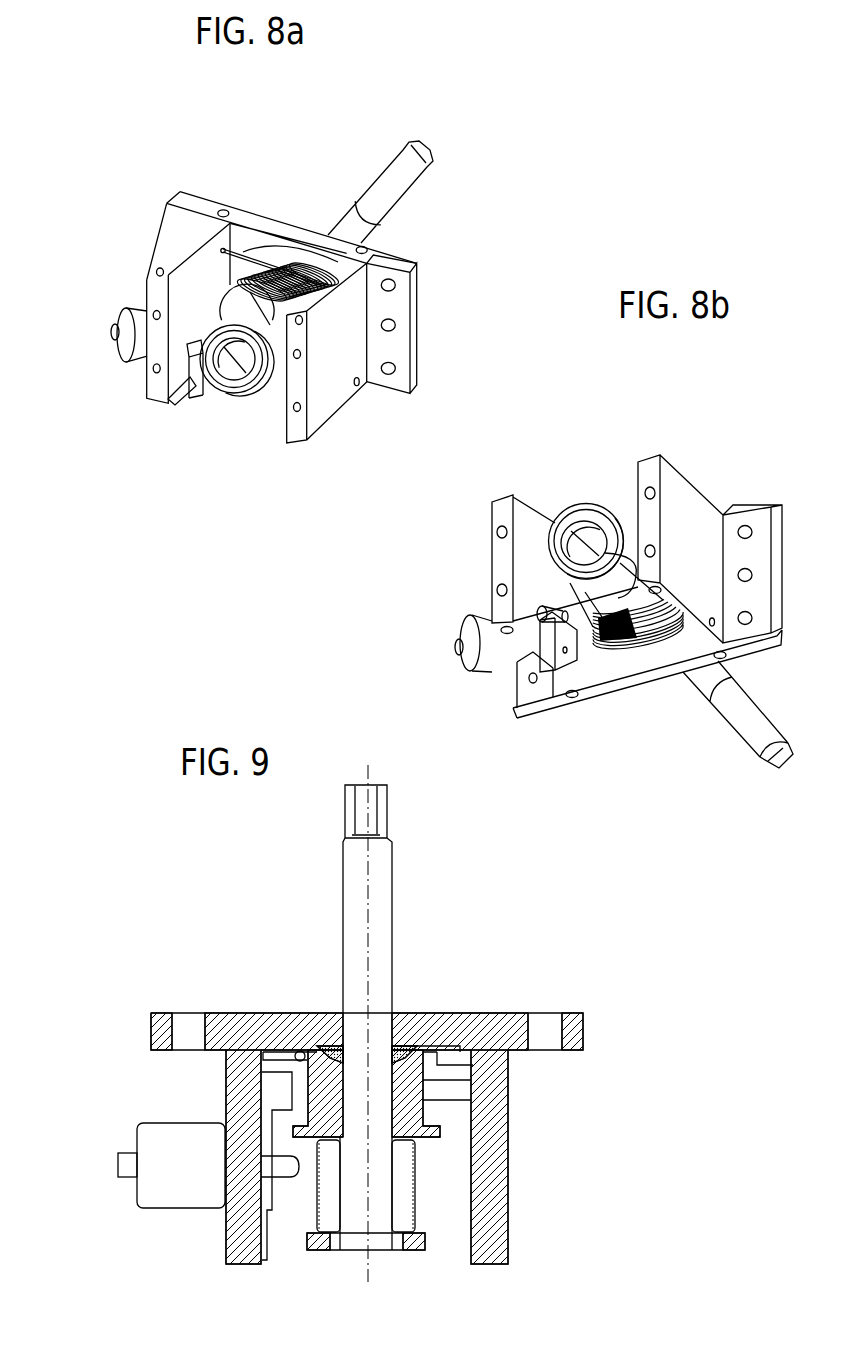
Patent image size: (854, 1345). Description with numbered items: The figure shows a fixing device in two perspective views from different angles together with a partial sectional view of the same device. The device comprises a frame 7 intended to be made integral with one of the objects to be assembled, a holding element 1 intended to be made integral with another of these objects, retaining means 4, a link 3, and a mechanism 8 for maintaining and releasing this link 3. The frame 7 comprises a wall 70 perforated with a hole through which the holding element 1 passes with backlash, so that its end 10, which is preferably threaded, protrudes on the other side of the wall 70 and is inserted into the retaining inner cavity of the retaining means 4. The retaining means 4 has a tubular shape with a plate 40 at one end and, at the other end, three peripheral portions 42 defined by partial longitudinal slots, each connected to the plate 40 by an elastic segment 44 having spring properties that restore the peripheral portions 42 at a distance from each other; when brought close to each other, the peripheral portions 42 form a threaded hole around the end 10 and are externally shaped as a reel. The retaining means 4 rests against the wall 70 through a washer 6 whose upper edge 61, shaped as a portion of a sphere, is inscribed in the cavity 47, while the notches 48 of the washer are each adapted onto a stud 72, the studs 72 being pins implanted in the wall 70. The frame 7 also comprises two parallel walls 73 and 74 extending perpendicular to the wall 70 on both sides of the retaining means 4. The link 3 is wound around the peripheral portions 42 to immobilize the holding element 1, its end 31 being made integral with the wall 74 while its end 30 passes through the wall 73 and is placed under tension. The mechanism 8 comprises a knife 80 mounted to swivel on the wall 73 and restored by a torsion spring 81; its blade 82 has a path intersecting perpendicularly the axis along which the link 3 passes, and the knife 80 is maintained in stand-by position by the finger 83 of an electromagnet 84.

In FIG. 8a, the holding element 1 is at (394, 188).
In FIG. 9, the holding element 1 is at (372, 858).
In FIG. 8a, the link 3 is at (300, 262).
In FIG. 8a, the retaining means 4 is at (262, 403).
In FIG. 8b, the retaining means 4 is at (598, 492).
In FIG. 9, the retaining means 4 is at (392, 1260).
In FIG. 9, the washer 6 is at (318, 1050).
In FIG. 8a, the frame 7 is at (436, 229).
In FIG. 8a, the mechanism 8 is at (175, 415).
In FIG. 9, the end 10 is at (373, 1110).
In FIG. 8a, the end 30 is at (226, 250).
In FIG. 8a, the end 31 is at (358, 301).
In FIG. 9, the plate 40 is at (348, 1242).
In FIG. 9, the peripheral portions 42 is at (412, 1128).
In FIG. 9, the elastic segment 44 is at (413, 1205).
In FIG. 9, the cavity 47 is at (423, 1065).
In FIG. 9, the notches 48 is at (296, 1053).
In FIG. 9, the upper edge 61 is at (413, 1053).
In FIG. 8a, the wall 70 is at (273, 225).
In FIG. 9, the wall 70 is at (498, 1025).
In FIG. 9, the stud 72 is at (297, 1055).
In FIG. 8a, the wall 73 is at (178, 263).
In FIG. 9, the wall 73 is at (243, 1085).
In FIG. 8a, the wall 74 is at (325, 397).
In FIG. 8b, the wall 74 is at (688, 532).
In FIG. 9, the wall 74 is at (488, 1187).
In FIG. 8a, the knife 80 is at (197, 373).
In FIG. 8b, the knife 80 is at (553, 640).
In FIG. 9, the knife 80 is at (267, 1198).
In FIG. 8b, the torsion spring 81 is at (625, 648).
In FIG. 9, the torsion spring 81 is at (453, 1090).
In FIG. 8a, the blade 82 is at (176, 388).
In FIG. 8b, the blade 82 is at (523, 650).
In FIG. 9, the blade 82 is at (265, 1238).
In FIG. 8b, the finger 83 is at (557, 610).
In FIG. 9, the finger 83 is at (283, 1167).
In FIG. 8a, the electromagnet 84 is at (131, 343).
In FIG. 8b, the electromagnet 84 is at (478, 631).
In FIG. 9, the electromagnet 84 is at (168, 1147).